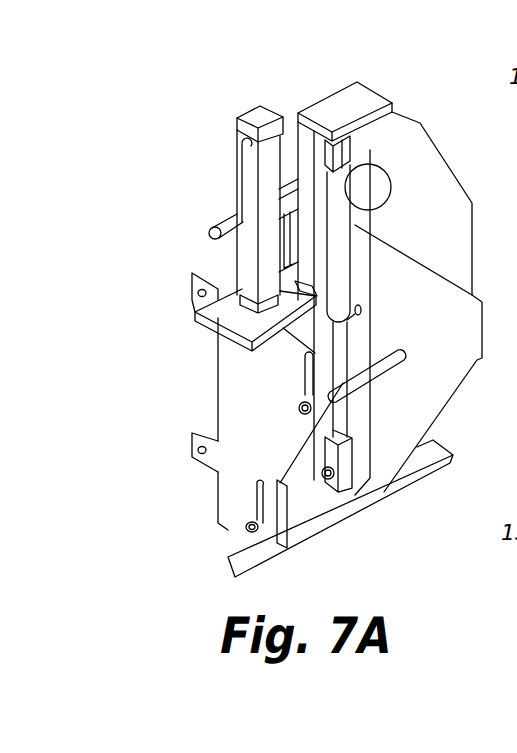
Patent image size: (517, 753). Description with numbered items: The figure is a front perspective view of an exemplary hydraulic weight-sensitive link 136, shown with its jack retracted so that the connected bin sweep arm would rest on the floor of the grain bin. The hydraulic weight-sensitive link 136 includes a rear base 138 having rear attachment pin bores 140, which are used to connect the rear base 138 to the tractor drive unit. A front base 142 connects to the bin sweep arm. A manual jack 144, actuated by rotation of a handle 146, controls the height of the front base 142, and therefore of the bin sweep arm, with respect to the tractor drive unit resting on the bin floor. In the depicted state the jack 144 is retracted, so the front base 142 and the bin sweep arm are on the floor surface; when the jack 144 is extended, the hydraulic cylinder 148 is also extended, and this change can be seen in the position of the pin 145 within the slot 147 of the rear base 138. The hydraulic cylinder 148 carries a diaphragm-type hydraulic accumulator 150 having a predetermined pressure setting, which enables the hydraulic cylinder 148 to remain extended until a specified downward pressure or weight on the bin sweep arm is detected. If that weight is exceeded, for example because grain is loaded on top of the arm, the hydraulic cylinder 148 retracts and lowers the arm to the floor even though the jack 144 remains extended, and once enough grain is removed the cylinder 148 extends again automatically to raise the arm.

The hydraulic weight-sensitive link 136 is at (228, 86).
The rear base 138 is at (243, 458).
The rear attachment pin bores 140 is at (193, 450).
The front base 142 is at (425, 350).
The manual jack 144 is at (243, 265).
The pin 145 is at (306, 412).
The handle 146 is at (222, 224).
The slot 147 is at (316, 378).
The hydraulic cylinder 148 is at (345, 268).
The diaphragm-type hydraulic accumulator 150 is at (380, 187).